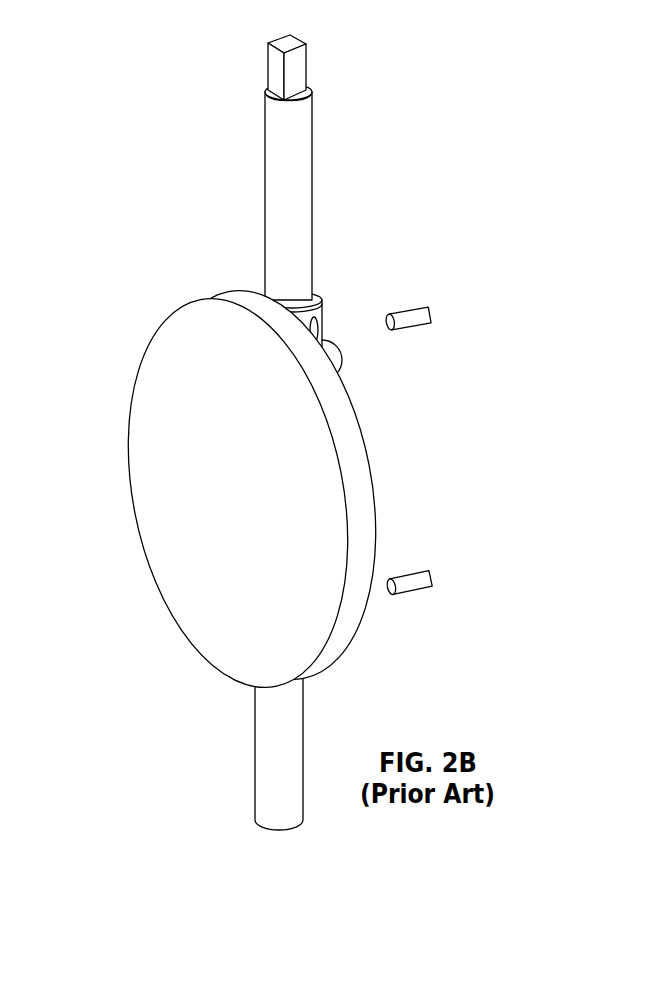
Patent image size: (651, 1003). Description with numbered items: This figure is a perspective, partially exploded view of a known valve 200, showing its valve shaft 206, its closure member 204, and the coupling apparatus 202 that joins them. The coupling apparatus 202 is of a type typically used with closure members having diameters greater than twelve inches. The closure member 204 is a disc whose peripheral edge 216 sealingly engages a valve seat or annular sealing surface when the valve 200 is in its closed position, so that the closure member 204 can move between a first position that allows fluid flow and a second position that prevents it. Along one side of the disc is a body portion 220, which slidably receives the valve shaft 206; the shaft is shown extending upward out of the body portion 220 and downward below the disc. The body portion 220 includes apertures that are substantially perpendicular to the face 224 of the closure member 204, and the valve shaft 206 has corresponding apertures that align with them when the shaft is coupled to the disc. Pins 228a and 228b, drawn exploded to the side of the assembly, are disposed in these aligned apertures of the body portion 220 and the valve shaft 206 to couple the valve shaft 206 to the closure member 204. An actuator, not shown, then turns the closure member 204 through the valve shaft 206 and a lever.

The valve 200 is at (305, 416).
The coupling apparatus 202 is at (277, 432).
The closure member 204 is at (268, 489).
The valve shaft 206 is at (313, 153).
The peripheral edge 216 is at (340, 478).
The body portion 220 is at (322, 306).
The face 224 is at (170, 493).
The pin 228a is at (404, 306).
The pin 228b is at (407, 571).